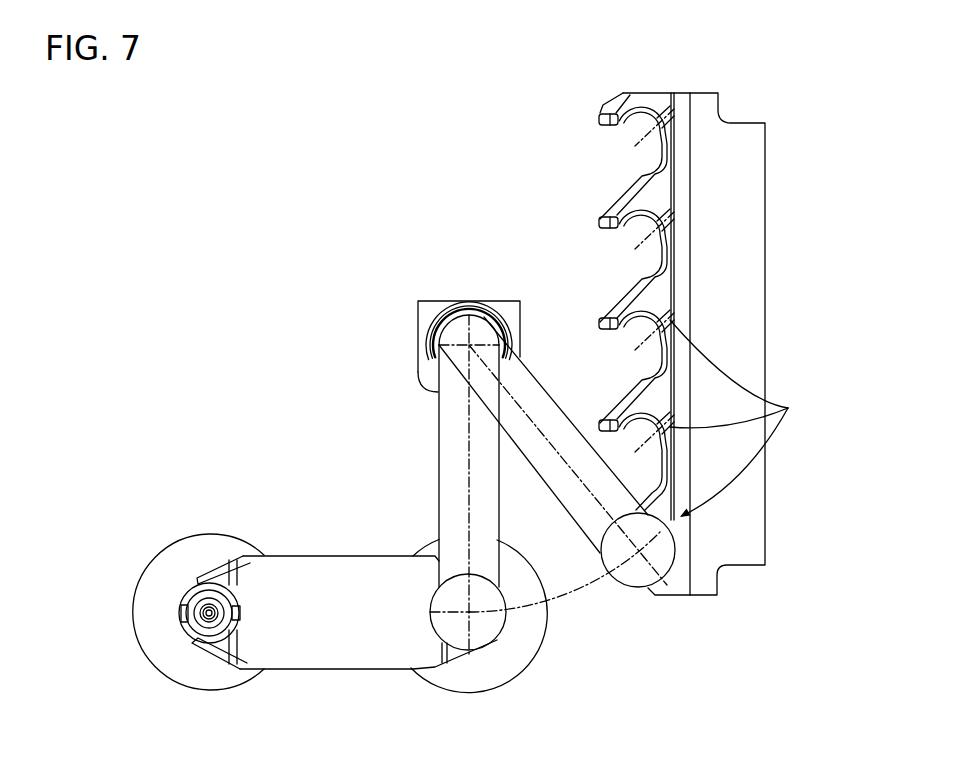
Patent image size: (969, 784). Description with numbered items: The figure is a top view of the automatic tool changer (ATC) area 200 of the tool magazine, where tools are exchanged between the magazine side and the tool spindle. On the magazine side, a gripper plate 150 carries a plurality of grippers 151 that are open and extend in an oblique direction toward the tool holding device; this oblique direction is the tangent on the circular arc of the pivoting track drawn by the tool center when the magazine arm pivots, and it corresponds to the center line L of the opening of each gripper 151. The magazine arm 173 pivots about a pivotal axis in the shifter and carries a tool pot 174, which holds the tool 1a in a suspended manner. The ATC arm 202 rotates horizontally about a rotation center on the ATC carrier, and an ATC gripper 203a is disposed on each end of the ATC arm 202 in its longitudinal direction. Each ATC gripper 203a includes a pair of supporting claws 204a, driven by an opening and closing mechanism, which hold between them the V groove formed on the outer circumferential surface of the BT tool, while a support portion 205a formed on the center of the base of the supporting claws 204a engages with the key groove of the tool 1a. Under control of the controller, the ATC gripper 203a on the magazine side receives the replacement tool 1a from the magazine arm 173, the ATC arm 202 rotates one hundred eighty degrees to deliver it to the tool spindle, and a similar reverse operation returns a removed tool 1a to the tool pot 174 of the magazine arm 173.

The gripper plate 150 is at (735, 240).
The gripper 151 is at (627, 350).
The center line of the opening of the gripper L is at (738, 418).
The magazine arm 173 is at (437, 440).
The tool pot 174 is at (440, 603).
The tool 1a is at (512, 665).
The ATC arm 202 is at (301, 577).
The automatic tool changer (ATC) area 200 is at (133, 472).
The supporting claw 204a is at (214, 582).
The ATC gripper 203a is at (246, 647).
The support portion 205a is at (240, 613).